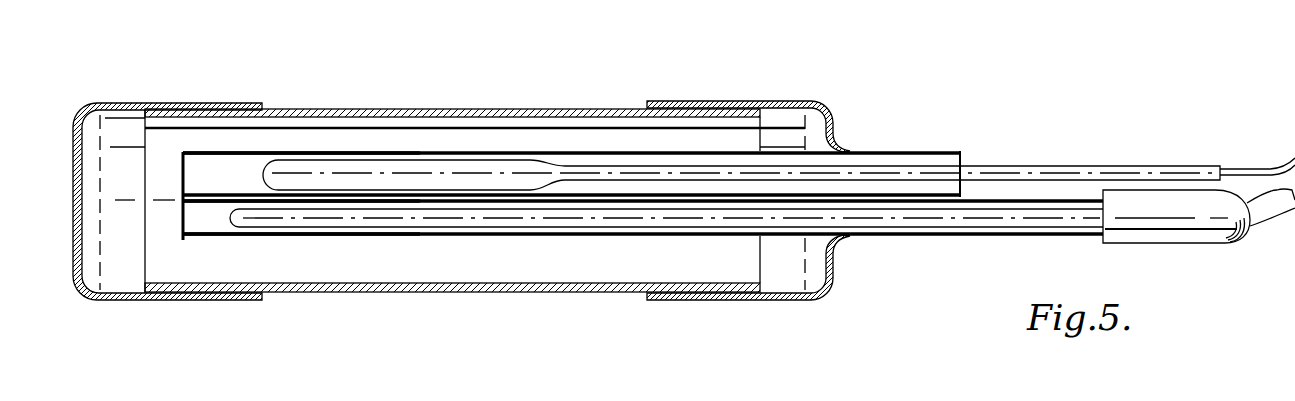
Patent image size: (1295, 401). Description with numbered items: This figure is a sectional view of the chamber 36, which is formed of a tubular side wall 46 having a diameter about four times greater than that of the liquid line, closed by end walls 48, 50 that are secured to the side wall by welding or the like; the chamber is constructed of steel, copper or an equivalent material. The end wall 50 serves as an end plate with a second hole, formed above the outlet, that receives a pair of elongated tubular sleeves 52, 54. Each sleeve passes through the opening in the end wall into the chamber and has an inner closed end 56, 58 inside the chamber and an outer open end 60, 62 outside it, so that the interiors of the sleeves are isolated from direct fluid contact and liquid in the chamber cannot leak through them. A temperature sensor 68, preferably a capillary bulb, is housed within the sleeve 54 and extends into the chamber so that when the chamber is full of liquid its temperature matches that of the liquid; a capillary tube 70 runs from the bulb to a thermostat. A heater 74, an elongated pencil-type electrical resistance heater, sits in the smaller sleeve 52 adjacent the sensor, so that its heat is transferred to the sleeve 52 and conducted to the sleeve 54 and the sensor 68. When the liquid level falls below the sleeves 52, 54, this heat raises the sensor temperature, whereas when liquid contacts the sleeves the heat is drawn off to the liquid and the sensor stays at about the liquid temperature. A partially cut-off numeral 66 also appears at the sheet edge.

The chamber 36 is at (299, 86).
The tubular side wall 46 is at (280, 295).
The end wall 48 is at (78, 288).
The end wall 50 is at (777, 298).
The tubular sleeve 52 is at (902, 240).
The tubular sleeve 54 is at (897, 152).
The inner closed end 56 is at (183, 174).
The inner closed end 58 is at (183, 212).
The outer open end 60 is at (1070, 238).
The outer open end 62 is at (963, 163).
The partially visible numeral 66 is at (610, 395).
The temperature sensor 68 is at (422, 165).
The capillary tube 70 is at (1252, 169).
The heater 74 is at (453, 222).